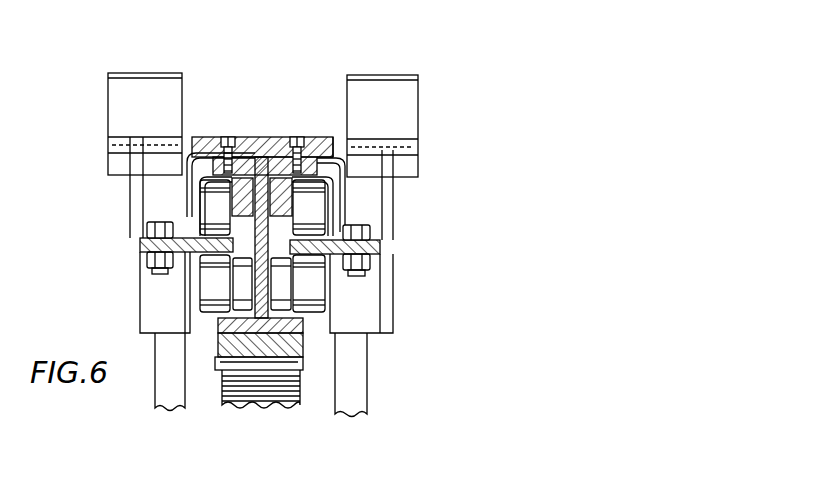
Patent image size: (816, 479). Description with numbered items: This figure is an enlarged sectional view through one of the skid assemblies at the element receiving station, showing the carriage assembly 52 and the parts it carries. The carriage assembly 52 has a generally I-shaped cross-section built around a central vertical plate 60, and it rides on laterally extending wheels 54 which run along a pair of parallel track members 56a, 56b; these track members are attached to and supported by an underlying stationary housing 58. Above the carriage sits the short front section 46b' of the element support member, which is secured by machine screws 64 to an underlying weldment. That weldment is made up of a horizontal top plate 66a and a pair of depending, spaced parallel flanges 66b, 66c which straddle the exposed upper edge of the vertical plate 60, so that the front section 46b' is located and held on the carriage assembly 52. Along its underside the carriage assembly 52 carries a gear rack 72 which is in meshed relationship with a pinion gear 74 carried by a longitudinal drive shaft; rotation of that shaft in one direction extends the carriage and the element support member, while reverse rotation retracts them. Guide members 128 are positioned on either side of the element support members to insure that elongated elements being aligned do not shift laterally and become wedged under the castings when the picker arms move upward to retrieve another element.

The guide member 128 is at (118, 102).
The short front section 46b' is at (258, 134).
The machine screws 64 is at (296, 136).
The horizontal top plate 66a is at (320, 136).
The depending flange 66b is at (200, 193).
The depending flange 66c is at (345, 195).
The wheels 54 is at (228, 219).
The track member 56a is at (148, 246).
The track member 56b is at (374, 247).
The central vertical plate 60 is at (256, 270).
The carriage assembly 52 is at (318, 336).
The gear rack 72 is at (297, 343).
The pinion gear 74 is at (265, 386).
The stationary housing 58 is at (167, 398).